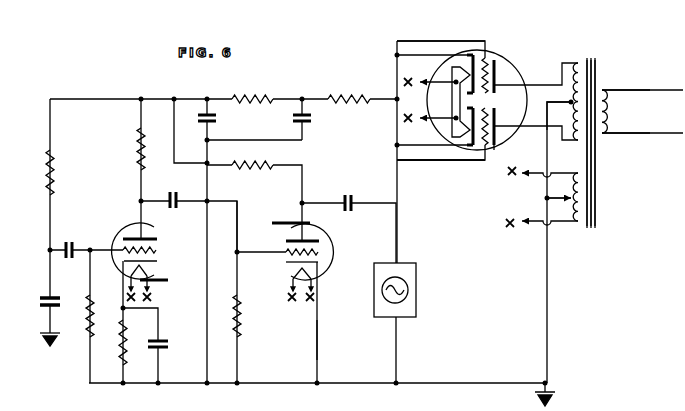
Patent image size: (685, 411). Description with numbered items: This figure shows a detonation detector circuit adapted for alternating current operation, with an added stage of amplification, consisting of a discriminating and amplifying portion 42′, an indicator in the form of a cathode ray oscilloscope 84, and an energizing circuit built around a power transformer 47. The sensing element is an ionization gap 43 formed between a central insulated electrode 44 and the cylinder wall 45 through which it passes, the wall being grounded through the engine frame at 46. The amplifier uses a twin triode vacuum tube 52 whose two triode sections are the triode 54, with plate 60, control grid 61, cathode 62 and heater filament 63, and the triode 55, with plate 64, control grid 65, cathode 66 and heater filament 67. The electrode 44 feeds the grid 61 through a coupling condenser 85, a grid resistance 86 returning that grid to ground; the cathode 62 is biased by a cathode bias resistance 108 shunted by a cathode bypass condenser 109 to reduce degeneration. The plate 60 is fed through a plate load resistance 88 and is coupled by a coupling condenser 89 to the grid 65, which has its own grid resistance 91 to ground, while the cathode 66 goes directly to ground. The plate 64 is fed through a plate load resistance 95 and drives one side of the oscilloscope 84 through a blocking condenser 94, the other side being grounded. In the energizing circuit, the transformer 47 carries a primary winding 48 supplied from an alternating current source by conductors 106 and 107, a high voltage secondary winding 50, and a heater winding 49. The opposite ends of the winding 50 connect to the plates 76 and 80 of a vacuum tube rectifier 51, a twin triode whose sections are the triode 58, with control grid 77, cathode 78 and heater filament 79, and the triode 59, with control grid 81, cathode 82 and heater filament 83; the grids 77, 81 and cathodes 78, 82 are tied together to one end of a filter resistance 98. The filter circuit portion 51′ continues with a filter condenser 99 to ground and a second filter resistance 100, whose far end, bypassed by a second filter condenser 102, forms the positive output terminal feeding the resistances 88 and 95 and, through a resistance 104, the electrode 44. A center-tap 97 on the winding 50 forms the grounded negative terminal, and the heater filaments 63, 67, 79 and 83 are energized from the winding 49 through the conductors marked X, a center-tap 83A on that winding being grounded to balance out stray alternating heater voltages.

The resistance 104 is at (46, 168).
The plate load resistance 88 is at (137, 147).
The coupling condenser 89 is at (171, 191).
The plate 60 is at (139, 236).
The coupling condenser 85 is at (68, 240).
The triode 54 is at (116, 233).
The vacuum tube 52 is at (232, 230).
The control grid 61 is at (157, 250).
The cathode 62 is at (158, 261).
The heater filament 63 is at (160, 277).
The central insulated electrode 44 is at (48, 296).
The ionization gap 43 is at (44, 300).
The cylinder wall 45 is at (42, 306).
The ground 46 is at (42, 340).
The grid resistance 86 is at (94, 312).
The cathode bias resistance 108 is at (120, 338).
The cathode bypass condenser 109 is at (169, 343).
The second filter resistance 100 is at (256, 95).
The second filter condenser 102 is at (217, 118).
The filter condenser 99 is at (313, 118).
The filter resistance 98 is at (350, 95).
The plate load resistance 95 is at (256, 161).
The blocking condenser 94 is at (348, 194).
The plate 64 is at (310, 240).
The triode 55 is at (330, 250).
The control grid 65 is at (284, 250).
The cathode 66 is at (285, 262).
The heater filament 67 is at (292, 274).
The grid resistance 91 is at (241, 330).
The cathode ray oscilloscope 84 is at (416, 277).
The discriminating and amplifying portion 42′ is at (320, 333).
The vacuum tube rectifier 51 is at (466, 172).
The filter circuit portion 51′ is at (286, 78).
The power transformer 47 is at (607, 68).
The conductor 106 is at (625, 90).
The conductor 107 is at (620, 134).
The primary winding 48 is at (608, 106).
The high voltage secondary winding 50 is at (571, 89).
The center-tap 97 is at (570, 108).
The vacuum tube heater winding 49 is at (564, 197).
The center-tap 83A is at (570, 196).
The cathode 82 is at (462, 43).
The heater filament 83 is at (452, 70).
The heater filament 79 is at (452, 132).
The cathode 78 is at (462, 152).
The control grid 81 is at (487, 57).
The triode 59 is at (499, 62).
The plate 80 is at (500, 68).
The plate 76 is at (502, 138).
The triode 58 is at (500, 146).
The control grid 77 is at (486, 148).